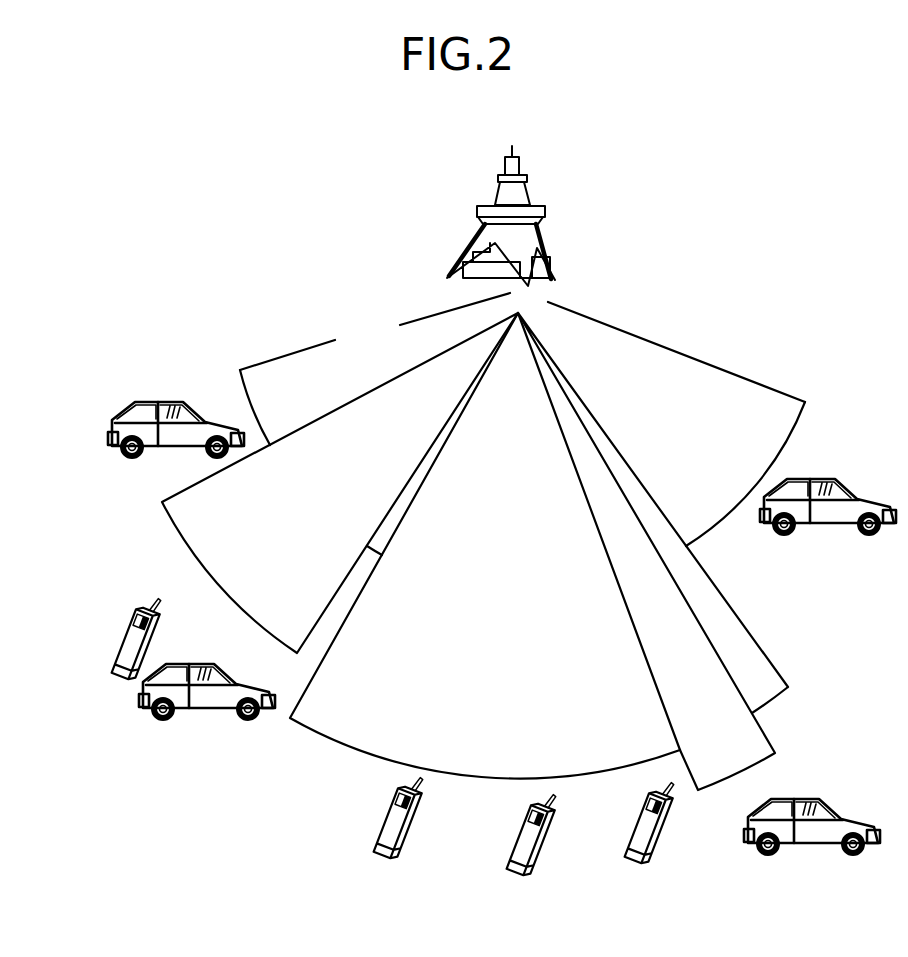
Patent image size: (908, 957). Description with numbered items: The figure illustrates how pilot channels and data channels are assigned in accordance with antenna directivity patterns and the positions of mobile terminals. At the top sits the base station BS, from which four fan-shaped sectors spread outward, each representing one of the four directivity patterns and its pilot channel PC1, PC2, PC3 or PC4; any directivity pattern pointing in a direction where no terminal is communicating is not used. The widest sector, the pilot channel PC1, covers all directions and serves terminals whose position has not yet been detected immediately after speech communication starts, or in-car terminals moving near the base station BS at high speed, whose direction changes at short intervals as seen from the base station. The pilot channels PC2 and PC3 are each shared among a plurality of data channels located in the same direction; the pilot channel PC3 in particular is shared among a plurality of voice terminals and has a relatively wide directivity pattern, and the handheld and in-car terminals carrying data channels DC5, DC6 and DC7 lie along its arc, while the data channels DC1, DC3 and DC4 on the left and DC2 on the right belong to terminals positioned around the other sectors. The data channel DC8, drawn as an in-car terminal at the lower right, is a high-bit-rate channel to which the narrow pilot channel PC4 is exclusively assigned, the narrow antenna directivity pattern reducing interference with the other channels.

The base station BS is at (562, 200).
The pilot channel PC1 is at (522, 424).
The pilot channel PC2 is at (340, 483).
The pilot channel PC3 is at (485, 546).
The pilot channel PC4 is at (653, 551).
The data channel DC1 is at (148, 397).
The data channel DC2 is at (867, 478).
The data channel DC3 is at (113, 630).
The data channel DC4 is at (188, 658).
The data channel DC5 is at (370, 818).
The data channel DC6 is at (505, 843).
The data channel DC7 is at (618, 843).
The data channel DC8 is at (836, 802).